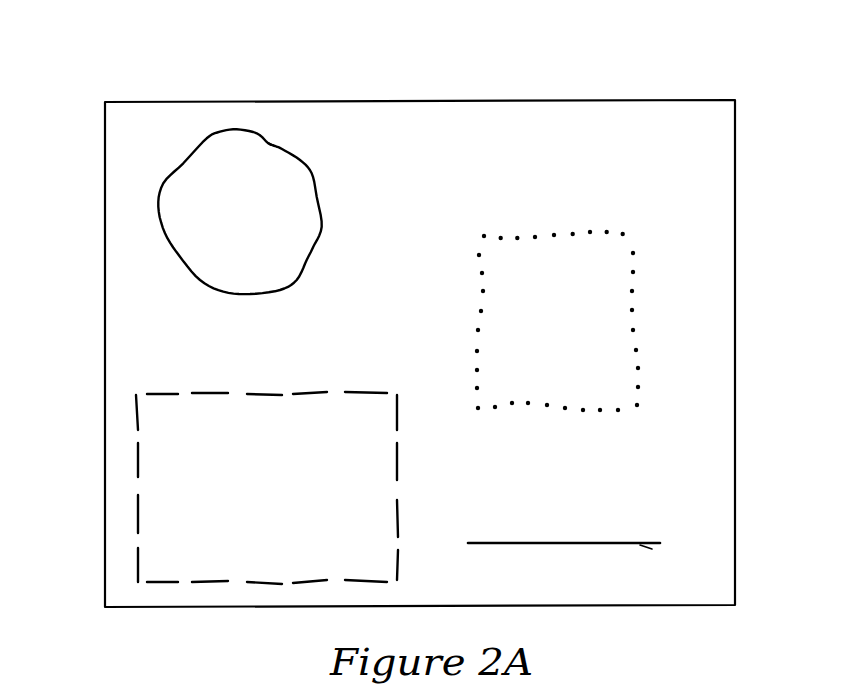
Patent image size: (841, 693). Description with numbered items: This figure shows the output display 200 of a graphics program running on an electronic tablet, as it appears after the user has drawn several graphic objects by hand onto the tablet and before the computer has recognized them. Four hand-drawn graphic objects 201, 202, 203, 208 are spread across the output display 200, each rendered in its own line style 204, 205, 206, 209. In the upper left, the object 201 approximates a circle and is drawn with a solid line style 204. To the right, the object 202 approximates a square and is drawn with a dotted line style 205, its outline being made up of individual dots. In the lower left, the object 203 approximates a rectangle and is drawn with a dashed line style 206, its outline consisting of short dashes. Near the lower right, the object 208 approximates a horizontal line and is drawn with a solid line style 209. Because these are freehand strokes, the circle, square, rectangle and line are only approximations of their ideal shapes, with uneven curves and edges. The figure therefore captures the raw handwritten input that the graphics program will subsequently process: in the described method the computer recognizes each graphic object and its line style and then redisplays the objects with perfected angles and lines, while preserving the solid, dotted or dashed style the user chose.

The output display 200 is at (105, 150).
The graphic object 201 is at (188, 215).
The graphic object 202 is at (607, 350).
The graphic object 203 is at (163, 497).
The line style 204 is at (275, 146).
The line style 205 is at (637, 405).
The line style 206 is at (145, 587).
The graphic object 208 is at (597, 567).
The line style 209 is at (640, 545).